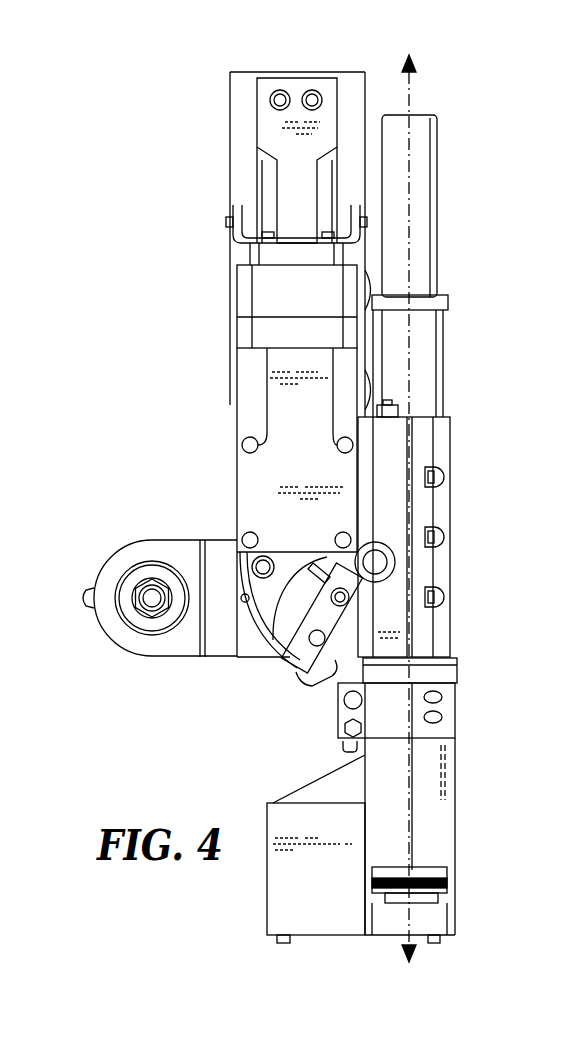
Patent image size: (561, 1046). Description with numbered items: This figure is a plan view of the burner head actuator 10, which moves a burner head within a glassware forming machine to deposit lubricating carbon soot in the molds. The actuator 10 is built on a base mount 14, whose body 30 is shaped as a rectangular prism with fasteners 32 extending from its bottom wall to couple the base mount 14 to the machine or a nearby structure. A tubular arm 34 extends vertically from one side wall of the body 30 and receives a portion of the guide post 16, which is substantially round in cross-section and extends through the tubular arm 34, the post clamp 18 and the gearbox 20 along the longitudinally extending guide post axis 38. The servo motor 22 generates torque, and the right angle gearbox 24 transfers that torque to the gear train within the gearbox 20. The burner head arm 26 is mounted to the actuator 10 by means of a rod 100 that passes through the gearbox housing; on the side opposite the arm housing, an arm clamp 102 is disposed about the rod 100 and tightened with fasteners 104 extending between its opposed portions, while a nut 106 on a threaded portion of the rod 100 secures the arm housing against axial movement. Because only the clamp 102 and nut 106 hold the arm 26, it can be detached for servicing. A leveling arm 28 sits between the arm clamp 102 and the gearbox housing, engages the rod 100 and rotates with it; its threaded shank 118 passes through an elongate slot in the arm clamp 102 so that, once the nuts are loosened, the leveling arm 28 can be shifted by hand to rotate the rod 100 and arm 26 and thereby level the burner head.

The burner head actuator 10 is at (155, 187).
The base mount 14 is at (322, 908).
The guide post 16 is at (420, 208).
The post clamp 18 is at (447, 718).
The gearbox 20 is at (428, 464).
The servo motor 22 is at (290, 195).
The gearbox 24 is at (295, 398).
The burner head arm 26 is at (157, 542).
The leveling arm 28 is at (300, 668).
The body 30 is at (348, 923).
The fasteners 32 is at (440, 941).
The tubular arm 34 is at (438, 800).
The guide post axis 38 is at (412, 84).
The rod 100 is at (351, 599).
The arm clamp 102 is at (360, 587).
The fasteners 104 is at (320, 600).
The nut 106 is at (325, 610).
The threaded shank 118 is at (320, 675).